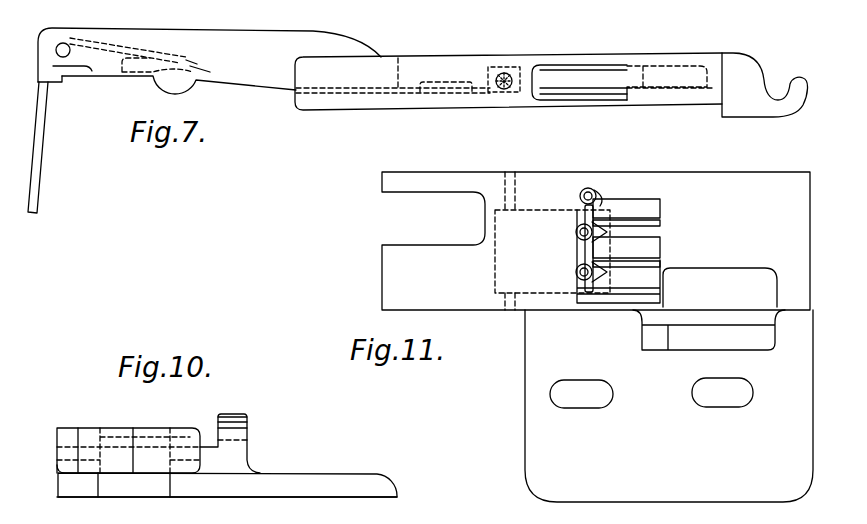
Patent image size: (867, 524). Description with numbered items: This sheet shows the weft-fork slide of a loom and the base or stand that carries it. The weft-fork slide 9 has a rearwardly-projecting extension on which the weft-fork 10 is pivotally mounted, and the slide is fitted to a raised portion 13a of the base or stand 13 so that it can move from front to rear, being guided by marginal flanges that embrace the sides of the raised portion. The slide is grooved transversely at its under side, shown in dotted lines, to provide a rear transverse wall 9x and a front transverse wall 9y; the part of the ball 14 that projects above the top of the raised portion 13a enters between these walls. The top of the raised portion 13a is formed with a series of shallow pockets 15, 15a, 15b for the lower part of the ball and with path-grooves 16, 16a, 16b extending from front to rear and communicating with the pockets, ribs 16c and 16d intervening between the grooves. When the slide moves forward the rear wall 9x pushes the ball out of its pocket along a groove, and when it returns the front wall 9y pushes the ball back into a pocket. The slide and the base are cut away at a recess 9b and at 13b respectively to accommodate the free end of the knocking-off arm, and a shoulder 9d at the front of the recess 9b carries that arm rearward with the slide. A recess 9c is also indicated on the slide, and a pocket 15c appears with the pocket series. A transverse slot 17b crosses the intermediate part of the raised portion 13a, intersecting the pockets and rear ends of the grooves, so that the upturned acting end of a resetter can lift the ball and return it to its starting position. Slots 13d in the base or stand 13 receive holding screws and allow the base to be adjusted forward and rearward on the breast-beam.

In FIG. 7, the weft-fork slide 9 is at (660, 53).
In FIG. 7, the recess of the weft-fork slide 9b is at (601, 37).
In FIG. 7, the recess of slide bar 9c is at (600, 48).
In FIG. 7, the shoulder 9d is at (627, 97).
In FIG. 7, the rear transverse wall 9x is at (487, 68).
In FIG. 7, the front transverse wall 9y is at (510, 70).
In FIG. 7, the weft-fork 10 is at (46, 133).
In FIG. 11, the base or stand 13 is at (537, 348).
In FIG. 10, the base or stand 13 is at (223, 490).
In FIG. 11, the raised portion of the base or stand 13a is at (696, 172).
In FIG. 10, the raised portion of the base or stand 13a is at (62, 428).
In FIG. 11, the cut-away portion of the base or stand 13b is at (751, 277).
In FIG. 11, the slots 13d is at (720, 401).
In FIG. 10, the ball 14 is at (227, 498).
In FIG. 11, the pocket 15 is at (587, 185).
In FIG. 11, the pocket 15a is at (576, 233).
In FIG. 11, the pocket 15b is at (576, 271).
In FIG. 11, the pin head 15c is at (599, 192).
In FIG. 11, the path-groove 16 is at (630, 205).
In FIG. 11, the path-groove 16a is at (647, 245).
In FIG. 11, the path-groove 16b is at (617, 303).
In FIG. 11, the rib 16c is at (652, 230).
In FIG. 11, the rib 16d is at (652, 267).
In FIG. 11, the slot 17b is at (572, 244).